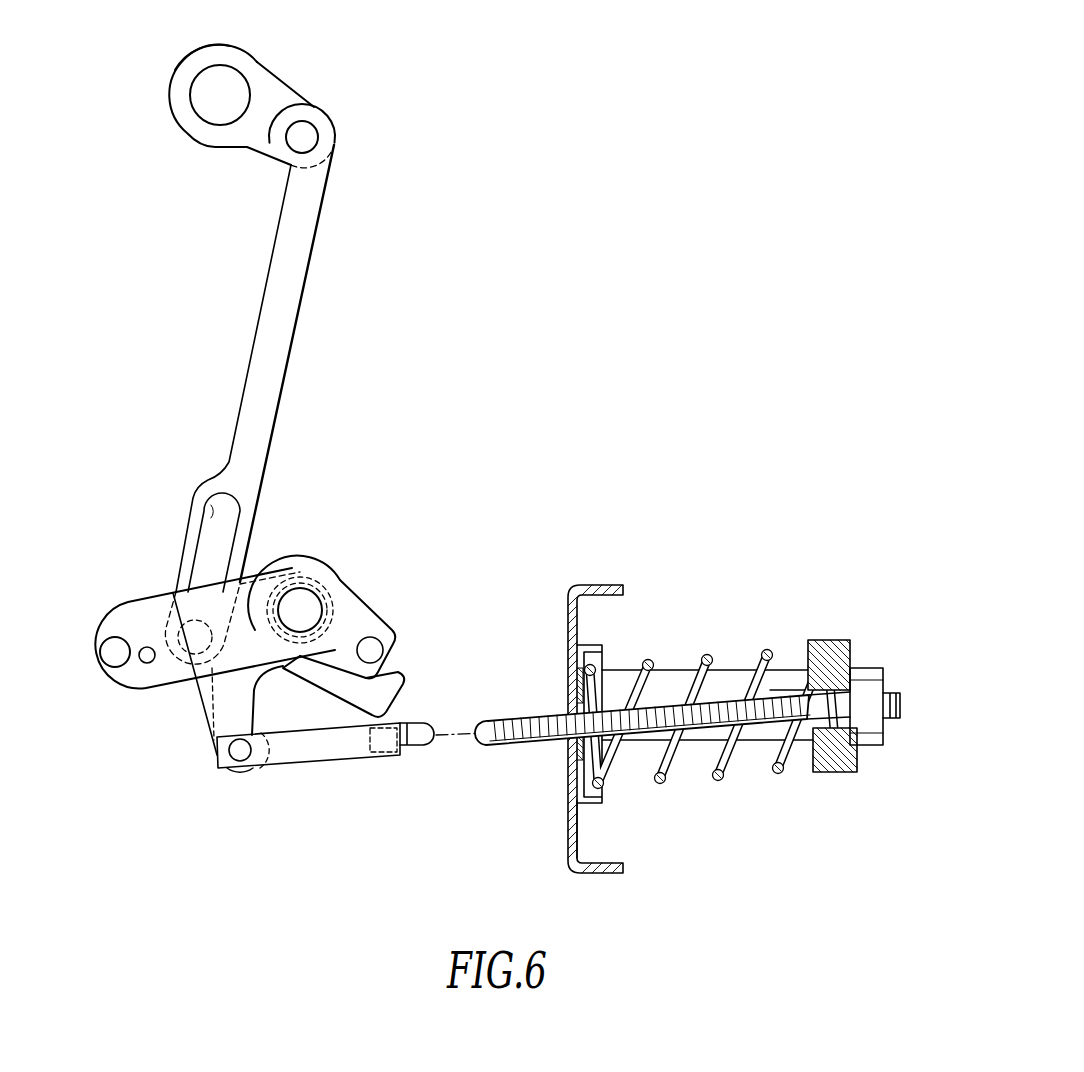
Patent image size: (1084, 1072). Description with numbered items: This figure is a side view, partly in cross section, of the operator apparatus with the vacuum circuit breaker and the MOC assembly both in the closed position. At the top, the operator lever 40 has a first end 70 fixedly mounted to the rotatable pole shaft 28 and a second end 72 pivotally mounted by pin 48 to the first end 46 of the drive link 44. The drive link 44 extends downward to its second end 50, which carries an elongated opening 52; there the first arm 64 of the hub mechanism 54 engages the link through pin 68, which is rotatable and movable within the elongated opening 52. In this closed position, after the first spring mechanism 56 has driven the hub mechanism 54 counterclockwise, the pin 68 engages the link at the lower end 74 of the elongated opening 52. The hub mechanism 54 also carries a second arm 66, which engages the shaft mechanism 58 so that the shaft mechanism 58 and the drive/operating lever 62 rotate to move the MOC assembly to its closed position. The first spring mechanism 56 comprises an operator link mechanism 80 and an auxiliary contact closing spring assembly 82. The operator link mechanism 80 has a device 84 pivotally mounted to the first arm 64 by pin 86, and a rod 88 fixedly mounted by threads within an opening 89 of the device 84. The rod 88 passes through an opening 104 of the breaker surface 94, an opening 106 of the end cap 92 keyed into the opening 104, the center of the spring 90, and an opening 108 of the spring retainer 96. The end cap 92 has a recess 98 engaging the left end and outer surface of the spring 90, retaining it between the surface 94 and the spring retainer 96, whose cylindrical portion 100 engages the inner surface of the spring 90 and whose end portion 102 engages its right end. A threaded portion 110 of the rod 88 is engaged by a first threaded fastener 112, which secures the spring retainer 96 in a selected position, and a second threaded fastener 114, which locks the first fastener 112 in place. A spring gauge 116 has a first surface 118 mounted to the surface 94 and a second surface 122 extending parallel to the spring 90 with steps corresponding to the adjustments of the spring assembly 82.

The operator lever 40 is at (226, 50).
The first end 70 is at (172, 80).
The pole shaft 28 is at (205, 125).
The first end 46 is at (320, 113).
The pin 48 is at (319, 136).
The second end 72 is at (290, 166).
The drive link 44 is at (270, 291).
The second end 50 is at (248, 518).
The elongated opening 52 is at (207, 512).
The drive/operating lever 62 is at (122, 592).
The hub mechanism 54 is at (174, 708).
The pin 68 is at (176, 592).
The lower end 74 is at (216, 660).
The first arm 64 is at (200, 733).
The shaft mechanism 58 is at (374, 590).
The second arm 66 is at (367, 700).
The device 84 is at (300, 762).
The pin 86 is at (222, 752).
The opening 89 is at (393, 760).
The rod 88 is at (420, 742).
The surface 94 is at (568, 590).
The first surface 118 is at (580, 840).
The end cap 92 is at (596, 650).
The opening 104 is at (574, 690).
The opening 106 is at (572, 746).
The second surface 122 is at (790, 688).
The spring 90 is at (652, 662).
The recess 98 is at (598, 662).
The cylindrical portion 100 is at (820, 646).
The opening 108 is at (830, 768).
The spring gauge 116 is at (750, 758).
The first spring mechanism 56 is at (706, 634).
The auxiliary contact closing spring assembly 82 is at (684, 822).
The operator link mechanism 80 is at (430, 700).
The spring retainer 96 is at (836, 642).
The end portion 102 is at (851, 650).
The second threaded fastener 114 is at (883, 742).
The first threaded fastener 112 is at (860, 746).
The threaded portion 110 is at (892, 692).